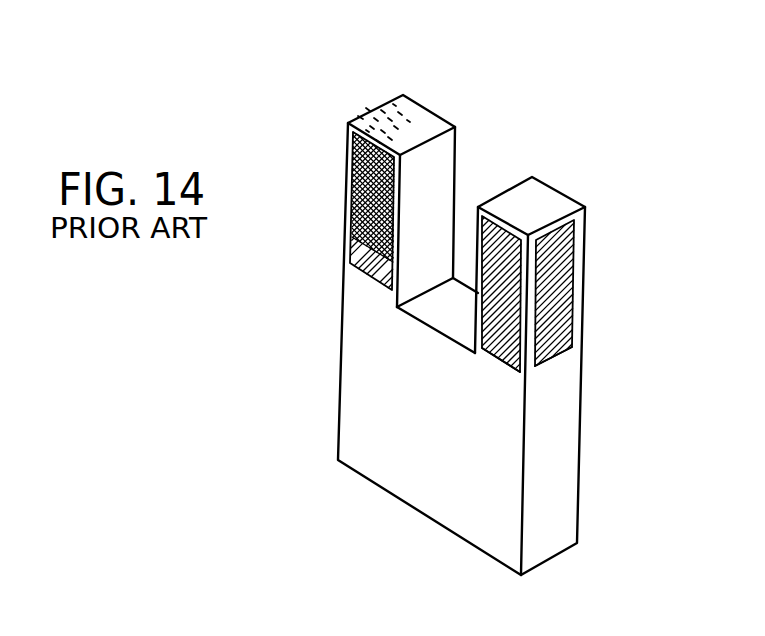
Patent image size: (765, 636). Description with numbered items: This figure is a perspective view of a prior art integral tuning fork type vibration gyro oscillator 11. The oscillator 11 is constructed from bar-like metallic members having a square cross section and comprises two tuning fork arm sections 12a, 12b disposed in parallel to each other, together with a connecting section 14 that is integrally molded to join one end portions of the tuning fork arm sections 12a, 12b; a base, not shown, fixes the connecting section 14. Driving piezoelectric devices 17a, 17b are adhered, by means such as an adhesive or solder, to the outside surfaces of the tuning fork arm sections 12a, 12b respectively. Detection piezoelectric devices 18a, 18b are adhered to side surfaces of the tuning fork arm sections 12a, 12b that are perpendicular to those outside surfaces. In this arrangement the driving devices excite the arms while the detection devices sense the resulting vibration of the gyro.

The oscillator 11 is at (325, 141).
The tuning fork arm section 12a is at (428, 127).
The tuning fork arm section 12b is at (533, 203).
The connecting section 14 is at (425, 363).
The driving piezoelectric device 17a is at (378, 128).
The driving piezoelectric device 17b is at (562, 315).
The detection piezoelectric device 18a is at (372, 276).
The detection piezoelectric device 18b is at (503, 332).